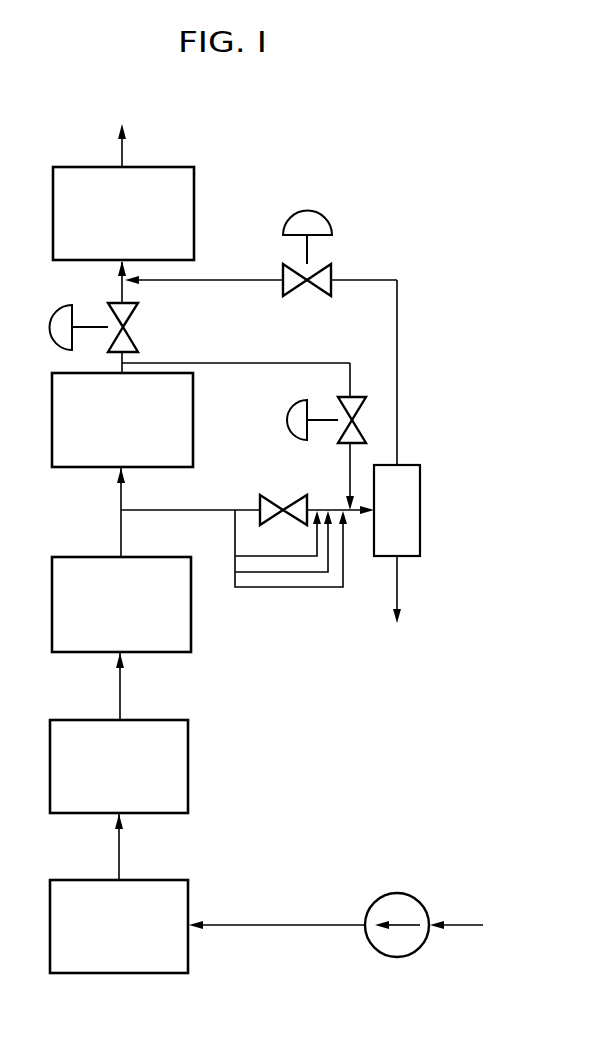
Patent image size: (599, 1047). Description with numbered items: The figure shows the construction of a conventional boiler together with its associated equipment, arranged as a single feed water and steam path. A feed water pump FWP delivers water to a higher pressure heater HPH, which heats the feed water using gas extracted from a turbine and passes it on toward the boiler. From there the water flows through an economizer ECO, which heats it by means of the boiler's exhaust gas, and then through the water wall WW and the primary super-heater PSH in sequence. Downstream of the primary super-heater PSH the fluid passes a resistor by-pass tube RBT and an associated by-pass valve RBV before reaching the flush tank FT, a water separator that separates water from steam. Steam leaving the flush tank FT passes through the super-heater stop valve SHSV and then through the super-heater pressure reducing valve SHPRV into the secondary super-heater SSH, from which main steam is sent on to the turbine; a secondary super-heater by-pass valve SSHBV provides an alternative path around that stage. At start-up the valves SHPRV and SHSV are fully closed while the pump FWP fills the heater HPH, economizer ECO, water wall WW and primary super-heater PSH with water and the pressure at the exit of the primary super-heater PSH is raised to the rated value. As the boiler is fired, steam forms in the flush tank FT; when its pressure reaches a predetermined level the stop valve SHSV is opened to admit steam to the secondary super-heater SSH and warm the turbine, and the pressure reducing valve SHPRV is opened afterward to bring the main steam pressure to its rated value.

The secondary super-heater SSH is at (123, 192).
The primary super-heater PSH is at (201, 460).
The water wall WW is at (121, 638).
The economizer ECO is at (119, 800).
The higher pressure heater HPH is at (207, 926).
The super-heater pressure reducing valve SHPRV is at (130, 313).
The super-heater stop valve SHSV is at (332, 275).
The secondary super-heater by-pass valve SSHBV is at (298, 420).
The recirculation bypass valve RBV is at (297, 497).
The resistor by-pass tube RBT is at (292, 588).
The flush tank FT is at (397, 544).
The feed water pump FWP is at (423, 898).